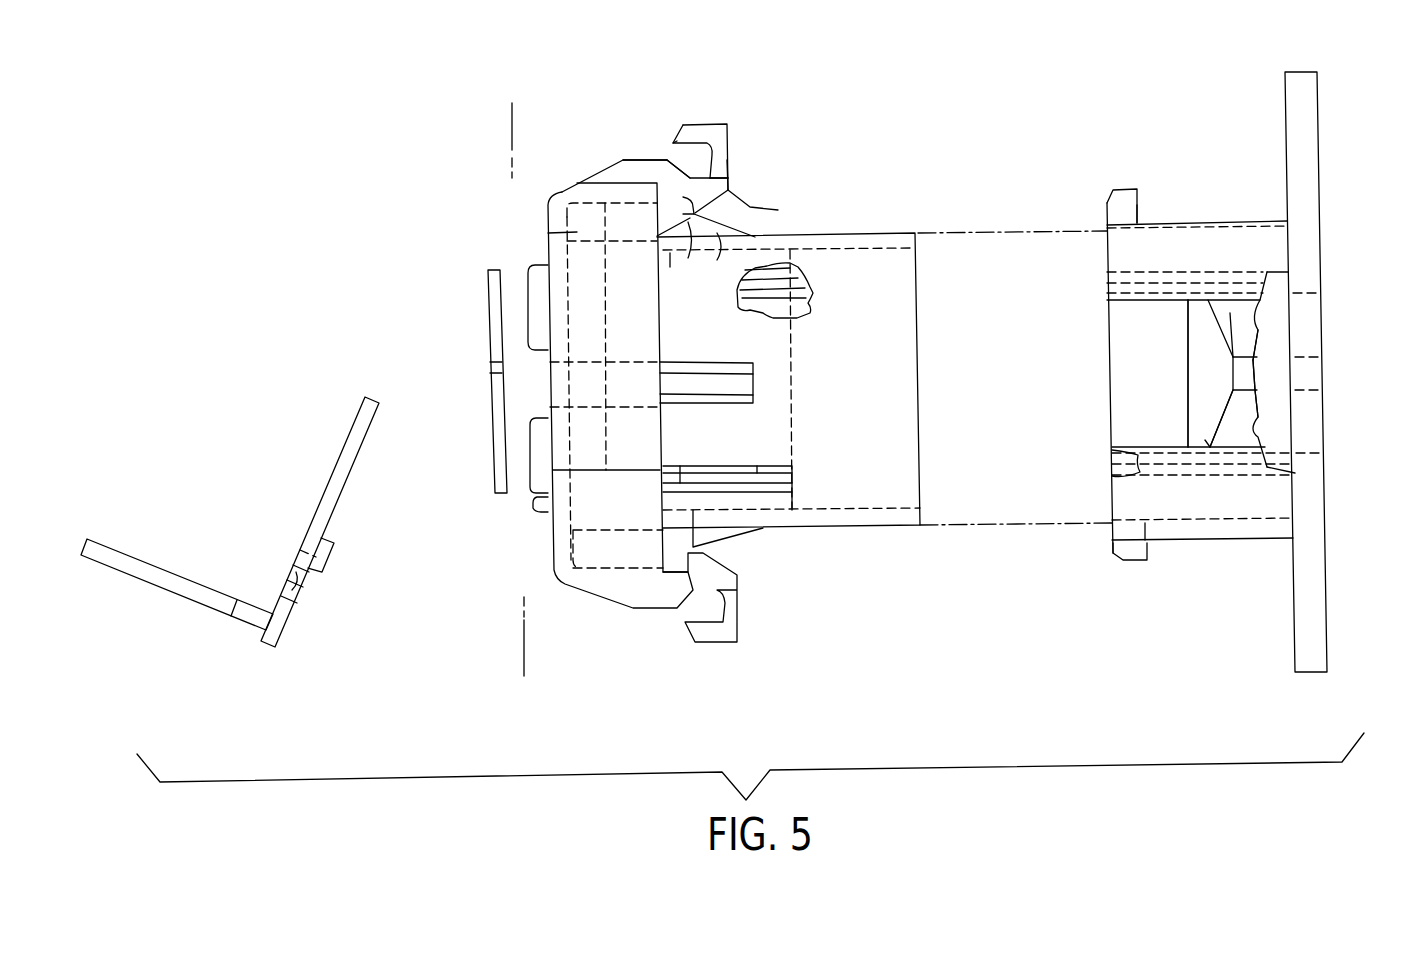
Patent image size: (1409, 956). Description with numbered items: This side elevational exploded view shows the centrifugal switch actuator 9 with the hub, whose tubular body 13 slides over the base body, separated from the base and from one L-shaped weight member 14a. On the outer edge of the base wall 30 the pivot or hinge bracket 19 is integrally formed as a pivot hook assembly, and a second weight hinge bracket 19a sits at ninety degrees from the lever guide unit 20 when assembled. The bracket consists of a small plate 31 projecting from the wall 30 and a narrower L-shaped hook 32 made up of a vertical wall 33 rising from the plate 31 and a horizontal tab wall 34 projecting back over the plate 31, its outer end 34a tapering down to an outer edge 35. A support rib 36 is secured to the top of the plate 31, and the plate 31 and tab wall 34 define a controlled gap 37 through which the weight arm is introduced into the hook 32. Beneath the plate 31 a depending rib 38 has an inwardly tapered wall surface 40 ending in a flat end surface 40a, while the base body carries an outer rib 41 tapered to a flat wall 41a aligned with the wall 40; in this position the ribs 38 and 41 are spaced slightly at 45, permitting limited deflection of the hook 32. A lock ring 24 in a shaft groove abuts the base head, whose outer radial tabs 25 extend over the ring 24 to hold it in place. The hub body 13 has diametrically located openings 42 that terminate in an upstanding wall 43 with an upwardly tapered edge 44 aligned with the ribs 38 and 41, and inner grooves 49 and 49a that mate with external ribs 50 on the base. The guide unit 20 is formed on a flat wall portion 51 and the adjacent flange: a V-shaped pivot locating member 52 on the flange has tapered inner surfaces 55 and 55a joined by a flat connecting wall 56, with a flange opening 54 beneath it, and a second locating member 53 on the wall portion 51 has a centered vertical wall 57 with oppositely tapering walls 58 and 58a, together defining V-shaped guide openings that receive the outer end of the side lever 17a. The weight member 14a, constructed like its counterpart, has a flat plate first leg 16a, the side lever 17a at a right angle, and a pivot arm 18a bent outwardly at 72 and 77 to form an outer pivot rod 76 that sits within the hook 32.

The centrifugal switch actuator 9 is at (510, 127).
The tubular body 13 is at (1142, 577).
The weight member 14a is at (251, 528).
The latch arm 16a is at (173, 573).
The side lever 17a is at (337, 495).
The pivot portion 18a is at (313, 582).
The pivot bracket 19 is at (694, 148).
The weight hinge bracket 19a is at (758, 615).
The pivot lever guide unit 20 is at (1176, 425).
The lock ring 24 is at (486, 335).
The outer radial tabs 25 is at (527, 273).
The wall 30 is at (558, 197).
The small plate 31 is at (728, 182).
The hook 32 is at (584, 167).
The vertical wall 33 is at (730, 148).
The horizontal tab wall 34 is at (727, 123).
The outer end 34a is at (676, 124).
The outer edge 35 is at (675, 142).
The support rib 36 is at (643, 157).
The controlled gap 37 is at (672, 152).
The depending rib 38 is at (756, 222).
The inwardly tapered wall surface 40 is at (677, 193).
The flat end surface 40a is at (672, 224).
The outer rib 41 is at (719, 261).
The flat wall 41a is at (688, 259).
The openings 42 is at (795, 236).
The upstanding wall 43 is at (1135, 207).
The upwardly tapered edge 44 is at (1113, 192).
The spacing 45 is at (680, 228).
The inner groove 49 is at (1112, 472).
The inner groove 49a is at (1107, 287).
The external rib 50 is at (798, 478).
The flat wall portion 51 is at (806, 311).
The pivot locating member 52 is at (1277, 270).
The pivot locating member 53 is at (1203, 447).
The flange opening 54 is at (1330, 353).
The tapered inner surface 55 is at (1252, 332).
The lower edge 55a is at (1247, 427).
The flat connecting wall 56 is at (1248, 375).
The centered vertical wall 57 is at (1190, 332).
The tapering wall 58 is at (1230, 313).
The tapering wall 58a is at (1228, 447).
The bend 72 is at (295, 602).
The outer pivot rod 76 is at (322, 565).
The bend 77 is at (310, 593).